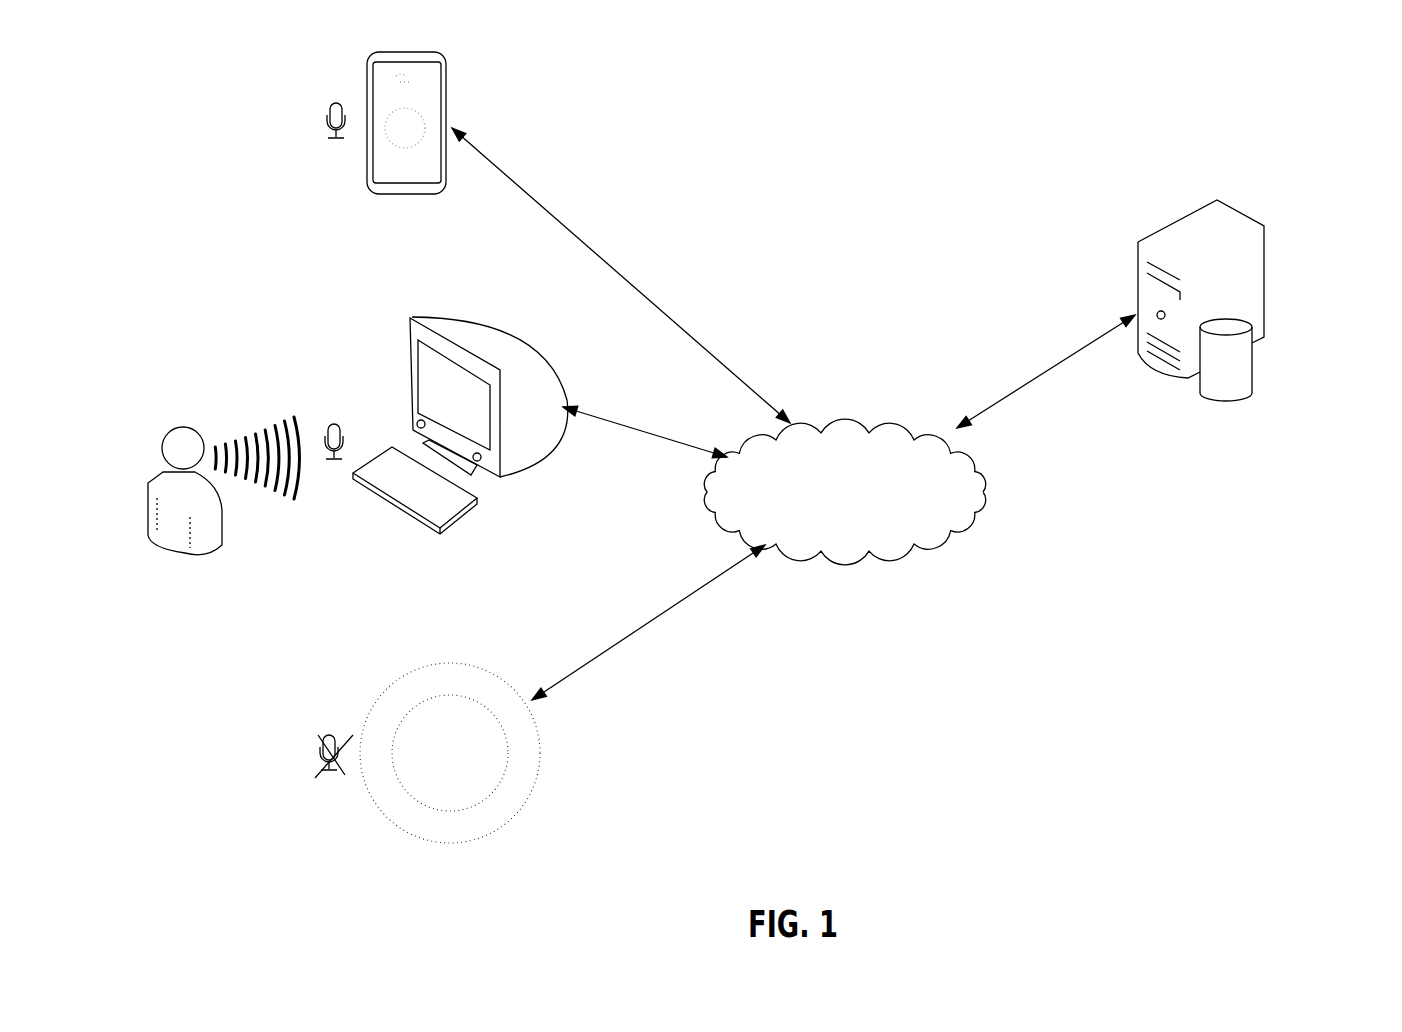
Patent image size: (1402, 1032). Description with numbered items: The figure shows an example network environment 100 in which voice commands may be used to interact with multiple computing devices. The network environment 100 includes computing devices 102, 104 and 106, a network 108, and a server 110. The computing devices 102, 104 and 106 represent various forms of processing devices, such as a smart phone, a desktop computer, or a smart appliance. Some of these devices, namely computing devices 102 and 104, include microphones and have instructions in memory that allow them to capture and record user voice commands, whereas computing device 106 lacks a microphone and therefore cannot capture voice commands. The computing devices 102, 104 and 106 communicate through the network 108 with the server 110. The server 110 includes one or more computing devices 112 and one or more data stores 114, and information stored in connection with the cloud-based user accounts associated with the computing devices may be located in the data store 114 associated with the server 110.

The network environment 100 is at (1387, 99).
The computing device 102 is at (405, 52).
The computing device 104 is at (512, 340).
The computing device 106 is at (462, 665).
The network 108 is at (842, 425).
The server 110 is at (1147, 377).
The computing device 112 is at (1242, 213).
The data store 114 is at (1252, 393).